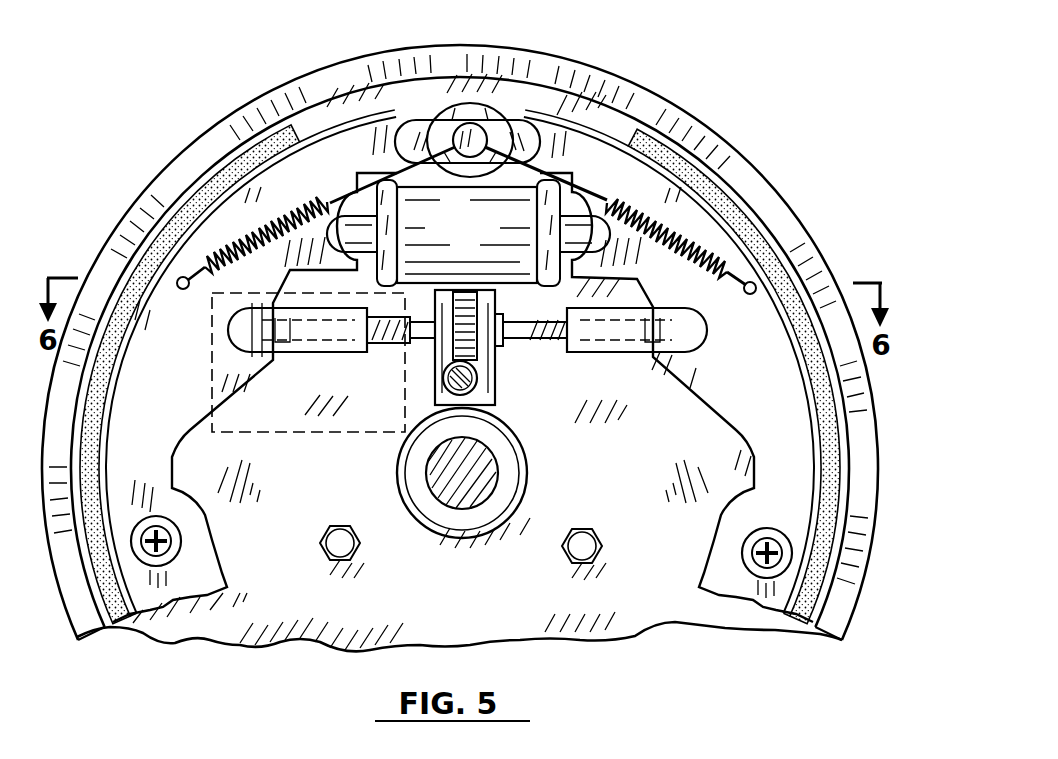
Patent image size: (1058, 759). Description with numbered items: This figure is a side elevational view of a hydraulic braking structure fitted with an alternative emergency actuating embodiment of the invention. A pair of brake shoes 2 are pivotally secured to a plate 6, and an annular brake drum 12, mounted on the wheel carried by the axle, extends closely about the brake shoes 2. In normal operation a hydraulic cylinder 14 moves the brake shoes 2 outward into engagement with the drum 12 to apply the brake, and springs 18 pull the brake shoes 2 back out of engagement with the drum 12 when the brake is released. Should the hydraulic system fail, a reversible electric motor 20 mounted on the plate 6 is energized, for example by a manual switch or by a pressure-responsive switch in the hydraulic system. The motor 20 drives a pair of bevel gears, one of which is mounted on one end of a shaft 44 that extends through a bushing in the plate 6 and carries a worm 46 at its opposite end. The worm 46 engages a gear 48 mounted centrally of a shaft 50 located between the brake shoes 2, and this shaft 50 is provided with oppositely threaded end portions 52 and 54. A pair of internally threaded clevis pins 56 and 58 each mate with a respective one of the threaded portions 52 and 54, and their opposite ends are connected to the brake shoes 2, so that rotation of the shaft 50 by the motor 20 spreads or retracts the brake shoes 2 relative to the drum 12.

The brake drum 12 is at (640, 86).
The brake shoes 2 is at (240, 143).
The springs 18 is at (247, 232).
The hydraulic cylinder 14 is at (456, 226).
The reversible electric motor 20 is at (320, 433).
The clevis pin 56 is at (300, 353).
The threaded end portion 52 is at (392, 345).
The worm 46 is at (494, 384).
The gear 48 is at (462, 300).
The shaft 50 is at (503, 315).
The shaft 44 is at (495, 369).
The threaded end portion 54 is at (550, 348).
The clevis pin 58 is at (640, 357).
The plate 6 is at (478, 609).